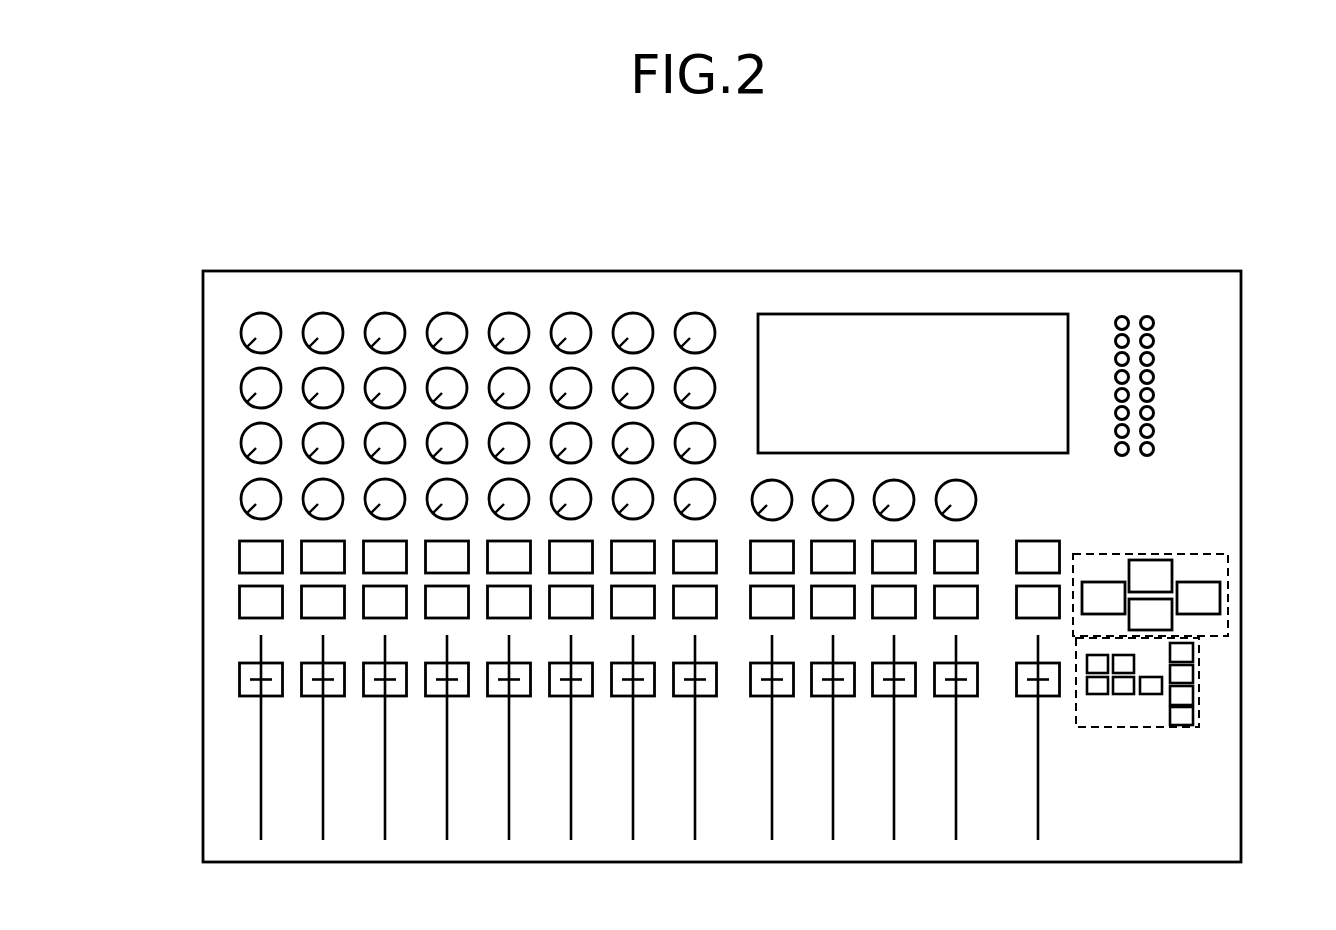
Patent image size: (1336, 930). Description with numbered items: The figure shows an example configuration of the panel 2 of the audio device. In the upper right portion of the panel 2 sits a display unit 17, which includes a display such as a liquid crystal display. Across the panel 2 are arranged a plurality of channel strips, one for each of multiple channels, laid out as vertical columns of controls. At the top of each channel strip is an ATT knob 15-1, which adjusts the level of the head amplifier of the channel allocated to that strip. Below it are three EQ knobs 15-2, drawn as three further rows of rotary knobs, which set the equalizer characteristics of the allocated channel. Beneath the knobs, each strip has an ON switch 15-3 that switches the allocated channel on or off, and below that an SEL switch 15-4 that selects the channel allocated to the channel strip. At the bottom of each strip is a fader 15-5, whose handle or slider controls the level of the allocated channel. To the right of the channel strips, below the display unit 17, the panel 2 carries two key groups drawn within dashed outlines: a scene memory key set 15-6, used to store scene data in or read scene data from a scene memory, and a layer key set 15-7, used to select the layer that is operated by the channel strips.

The panel 2 is at (612, 268).
The display unit 17 is at (895, 342).
The ATT knob 15-1 is at (232, 333).
The EQ knobs 15-2 is at (193, 367).
The ON switch 15-3 is at (230, 558).
The SEL switch 15-4 is at (230, 605).
The fader 15-5 is at (232, 755).
The scene memory key set 15-6 is at (1166, 552).
The layer key set 15-7 is at (1164, 733).